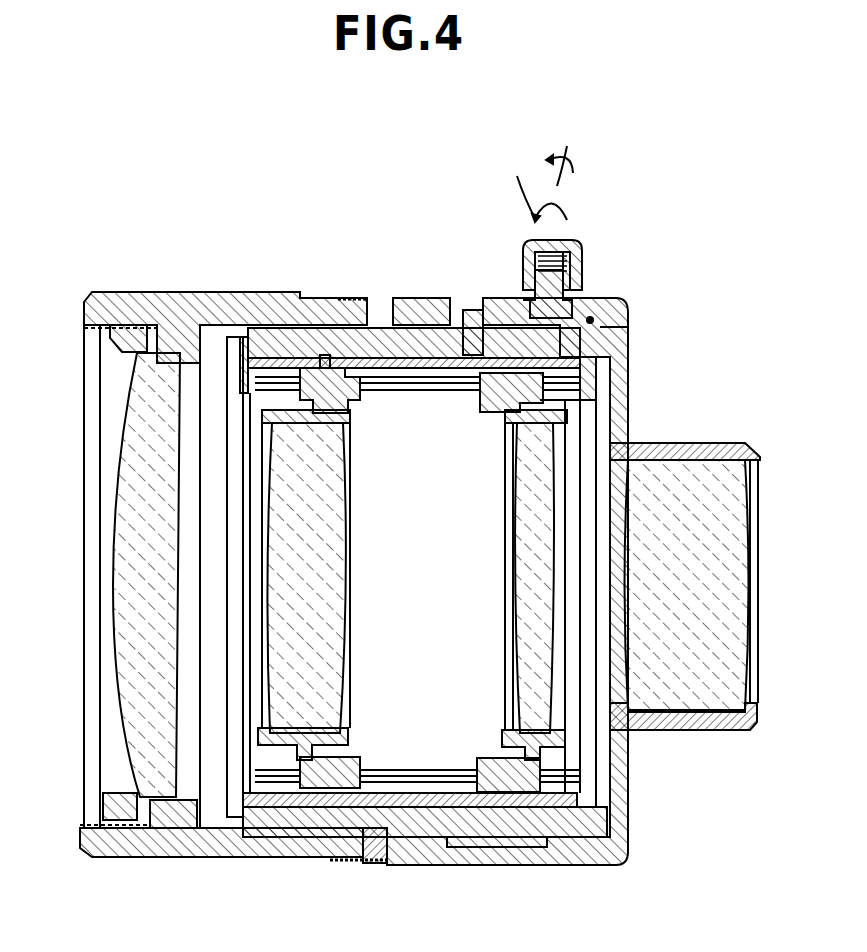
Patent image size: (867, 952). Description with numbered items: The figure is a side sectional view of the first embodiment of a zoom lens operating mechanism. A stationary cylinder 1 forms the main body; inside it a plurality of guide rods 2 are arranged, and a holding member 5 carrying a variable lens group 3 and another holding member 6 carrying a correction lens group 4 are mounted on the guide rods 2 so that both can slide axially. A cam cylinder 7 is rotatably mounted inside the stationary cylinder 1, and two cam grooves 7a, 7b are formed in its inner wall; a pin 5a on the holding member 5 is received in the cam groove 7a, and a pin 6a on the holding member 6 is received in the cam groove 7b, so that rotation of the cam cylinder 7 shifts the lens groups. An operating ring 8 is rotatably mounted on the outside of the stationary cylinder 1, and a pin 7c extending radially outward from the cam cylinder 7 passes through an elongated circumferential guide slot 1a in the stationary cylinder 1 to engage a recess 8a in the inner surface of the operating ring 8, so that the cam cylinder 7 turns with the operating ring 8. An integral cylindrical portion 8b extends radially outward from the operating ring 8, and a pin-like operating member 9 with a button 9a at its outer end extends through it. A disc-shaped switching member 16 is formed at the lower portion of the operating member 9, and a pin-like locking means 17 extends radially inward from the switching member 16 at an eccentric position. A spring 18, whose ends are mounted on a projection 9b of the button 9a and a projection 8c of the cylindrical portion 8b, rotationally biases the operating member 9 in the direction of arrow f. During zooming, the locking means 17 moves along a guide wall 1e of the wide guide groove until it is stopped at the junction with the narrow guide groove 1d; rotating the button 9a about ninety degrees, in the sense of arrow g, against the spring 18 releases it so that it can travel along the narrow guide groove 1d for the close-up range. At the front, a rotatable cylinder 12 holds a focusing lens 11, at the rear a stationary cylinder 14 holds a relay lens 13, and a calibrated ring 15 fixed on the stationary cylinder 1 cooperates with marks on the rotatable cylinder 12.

The stationary cylinder 1 is at (515, 581).
The elongated circumferential guide slot 1a is at (421, 293).
The narrow guide groove 1d is at (520, 292).
The guide wall 1e is at (630, 329).
The guide rods 2 is at (417, 579).
The variable lens group 3 is at (320, 585).
The correction lens group 4 is at (513, 585).
The holding member 5 is at (343, 578).
The pin 5a is at (352, 280).
The holding member 6 is at (504, 582).
The pin 6a is at (465, 410).
The cam cylinder 7 is at (417, 546).
The cam groove 7a is at (317, 312).
The cam groove 7b is at (510, 428).
The pin 7c is at (439, 407).
The operating ring 8 is at (516, 290).
The recess 8a is at (456, 301).
The cylindrical portion 8b is at (593, 271).
The projection 8c is at (508, 253).
The operating member 9 is at (572, 273).
The button 9a is at (566, 211).
The projection 9b is at (600, 253).
The focusing lens 11 is at (141, 618).
The rotatable cylinder 12 is at (223, 553).
The relay lens 13 is at (687, 624).
The stationary cylinder 14 is at (685, 555).
The calibrated ring 15 is at (359, 871).
The switching member 16 is at (510, 272).
The locking means 17 is at (618, 307).
The spring 18 is at (582, 255).
The arrow g is at (536, 187).
The arrow f is at (559, 154).